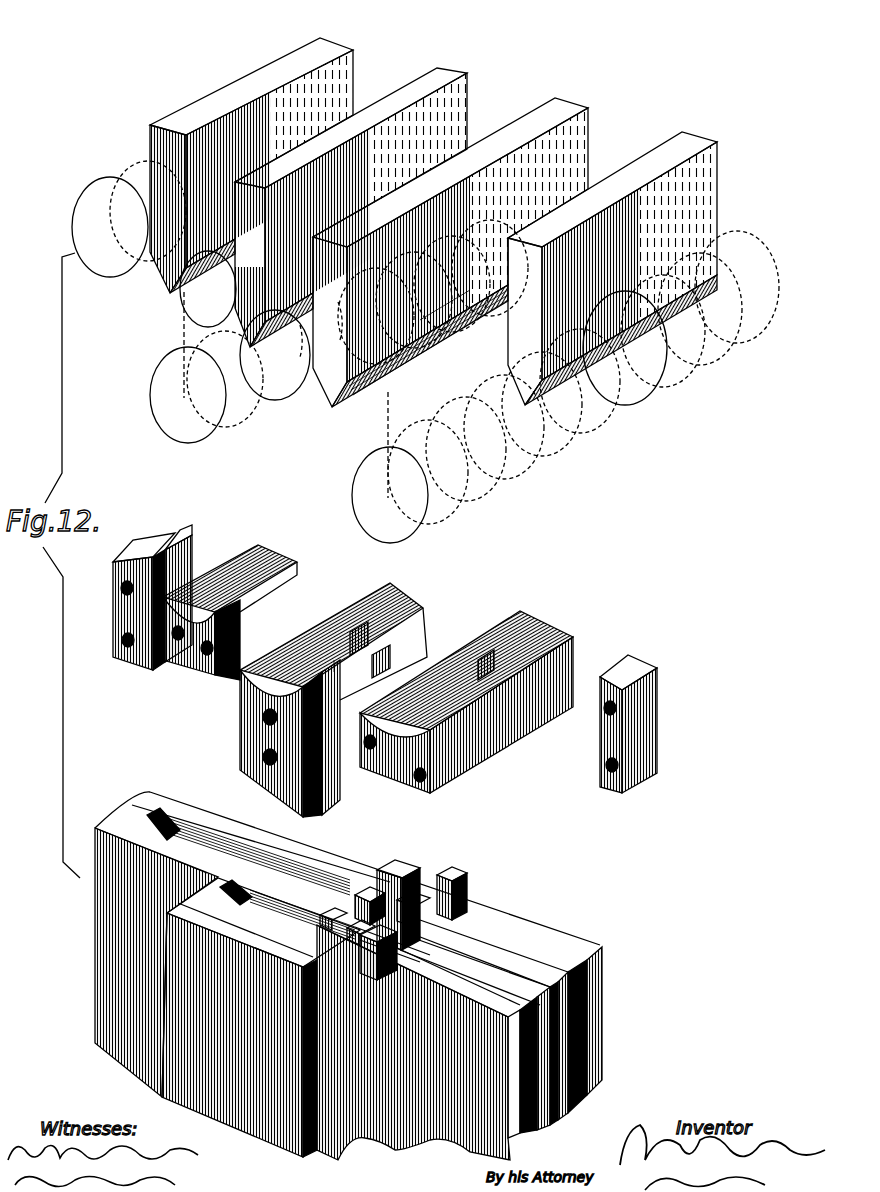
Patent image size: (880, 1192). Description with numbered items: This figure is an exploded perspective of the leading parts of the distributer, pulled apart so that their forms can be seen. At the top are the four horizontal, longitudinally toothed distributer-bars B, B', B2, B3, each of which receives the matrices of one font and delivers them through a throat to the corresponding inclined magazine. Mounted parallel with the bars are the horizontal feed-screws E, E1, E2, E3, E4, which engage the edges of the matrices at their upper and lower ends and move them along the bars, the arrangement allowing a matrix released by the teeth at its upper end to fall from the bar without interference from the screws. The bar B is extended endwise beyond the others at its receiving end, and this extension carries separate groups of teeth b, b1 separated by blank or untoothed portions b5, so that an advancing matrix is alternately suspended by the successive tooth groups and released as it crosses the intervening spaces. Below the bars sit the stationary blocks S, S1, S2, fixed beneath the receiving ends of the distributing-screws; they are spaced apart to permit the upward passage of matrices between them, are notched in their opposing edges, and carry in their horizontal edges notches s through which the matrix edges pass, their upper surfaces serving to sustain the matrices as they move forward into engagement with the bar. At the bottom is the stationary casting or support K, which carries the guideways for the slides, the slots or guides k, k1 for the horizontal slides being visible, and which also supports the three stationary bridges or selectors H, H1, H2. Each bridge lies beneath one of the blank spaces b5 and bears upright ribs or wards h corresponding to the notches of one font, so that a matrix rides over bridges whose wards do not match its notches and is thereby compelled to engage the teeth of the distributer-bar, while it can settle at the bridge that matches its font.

The distributer-bar B is at (251, 152).
The distributer-bar B' is at (351, 194).
The distributer-bar B2 is at (450, 241).
The distributer-bar B3 is at (612, 254).
The feed-screw E is at (112, 180).
The feed-screw E1 is at (178, 318).
The feed-screw E2 is at (280, 388).
The feed-screw E3 is at (366, 437).
The feed-screw E4 is at (648, 398).
The teeth b is at (370, 397).
The teeth b1 is at (404, 372).
The blank portion b5 is at (404, 318).
The stationary block S is at (160, 548).
The stationary block S1 is at (380, 608).
The stationary block S2 is at (506, 628).
The notch s is at (418, 700).
The bridge H is at (372, 952).
The bridge H1 is at (388, 892).
The bridge H2 is at (470, 895).
The upright rib or ward h is at (425, 870).
The slot or guide k is at (500, 970).
The slot or guide k1 is at (555, 960).
The stationary casting or support K is at (366, 976).